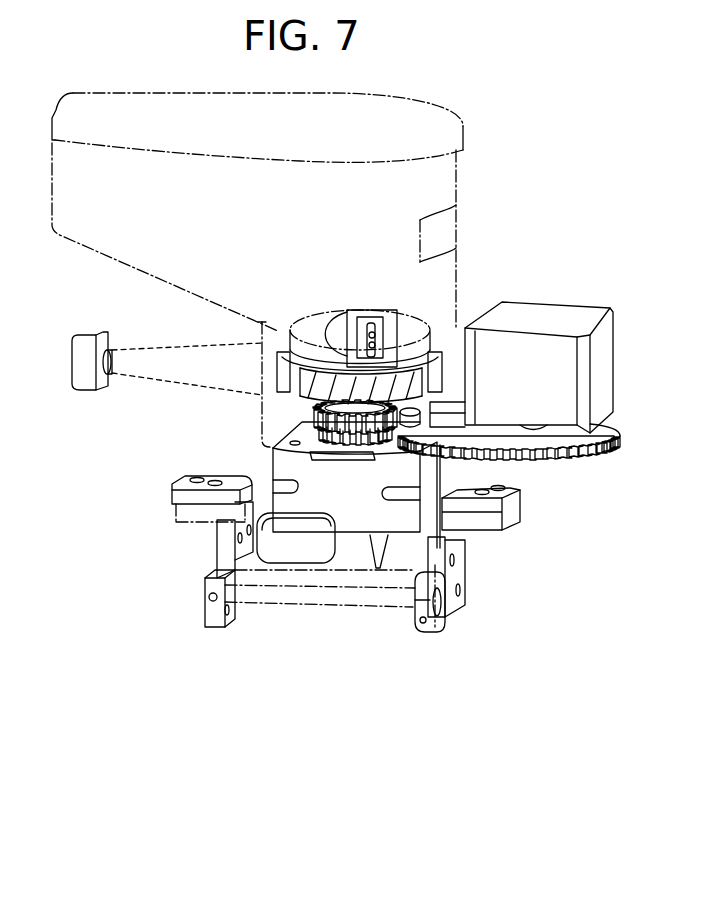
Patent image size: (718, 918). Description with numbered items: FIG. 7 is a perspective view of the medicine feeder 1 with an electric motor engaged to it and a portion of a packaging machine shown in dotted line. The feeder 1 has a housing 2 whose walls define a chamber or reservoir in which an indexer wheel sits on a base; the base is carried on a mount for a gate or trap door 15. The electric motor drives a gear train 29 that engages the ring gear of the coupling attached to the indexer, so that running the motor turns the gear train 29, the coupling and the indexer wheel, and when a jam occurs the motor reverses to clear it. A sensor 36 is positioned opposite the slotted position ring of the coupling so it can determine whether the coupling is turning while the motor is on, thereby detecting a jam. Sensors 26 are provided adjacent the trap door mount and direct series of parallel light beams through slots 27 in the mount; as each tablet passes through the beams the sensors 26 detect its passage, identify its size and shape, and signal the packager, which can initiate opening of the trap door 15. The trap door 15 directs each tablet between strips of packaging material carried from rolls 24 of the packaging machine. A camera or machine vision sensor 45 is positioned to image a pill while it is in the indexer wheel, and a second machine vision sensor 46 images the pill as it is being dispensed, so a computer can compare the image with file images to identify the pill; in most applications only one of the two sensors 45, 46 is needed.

The feeder 1 is at (472, 185).
The housing 2 is at (614, 358).
The trap door 15 is at (340, 558).
The rolls 24 is at (440, 612).
The sensors 26 is at (175, 497).
The slots 27 is at (280, 487).
The gear train 29 is at (600, 455).
The sensor 36 is at (420, 408).
The machine vision sensor 45 is at (85, 390).
The machine vision sensor 46 is at (287, 562).